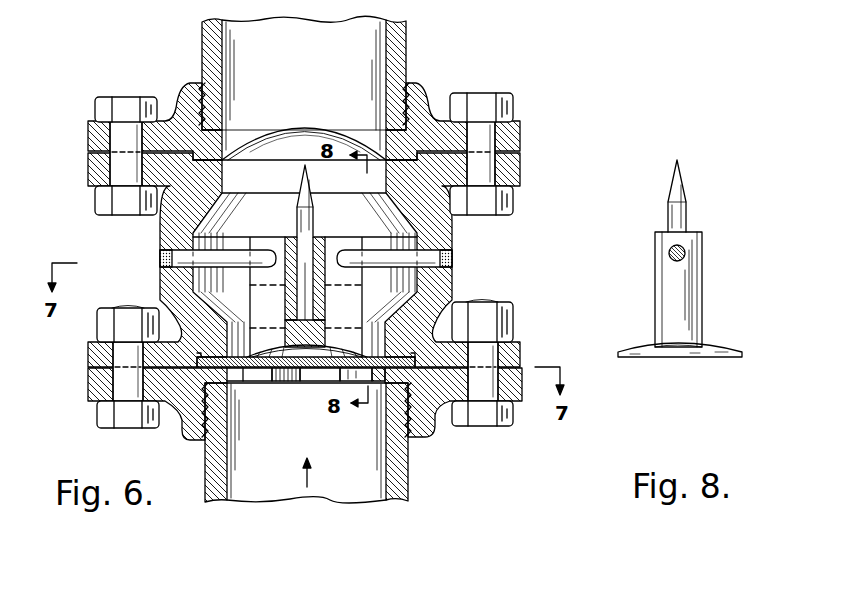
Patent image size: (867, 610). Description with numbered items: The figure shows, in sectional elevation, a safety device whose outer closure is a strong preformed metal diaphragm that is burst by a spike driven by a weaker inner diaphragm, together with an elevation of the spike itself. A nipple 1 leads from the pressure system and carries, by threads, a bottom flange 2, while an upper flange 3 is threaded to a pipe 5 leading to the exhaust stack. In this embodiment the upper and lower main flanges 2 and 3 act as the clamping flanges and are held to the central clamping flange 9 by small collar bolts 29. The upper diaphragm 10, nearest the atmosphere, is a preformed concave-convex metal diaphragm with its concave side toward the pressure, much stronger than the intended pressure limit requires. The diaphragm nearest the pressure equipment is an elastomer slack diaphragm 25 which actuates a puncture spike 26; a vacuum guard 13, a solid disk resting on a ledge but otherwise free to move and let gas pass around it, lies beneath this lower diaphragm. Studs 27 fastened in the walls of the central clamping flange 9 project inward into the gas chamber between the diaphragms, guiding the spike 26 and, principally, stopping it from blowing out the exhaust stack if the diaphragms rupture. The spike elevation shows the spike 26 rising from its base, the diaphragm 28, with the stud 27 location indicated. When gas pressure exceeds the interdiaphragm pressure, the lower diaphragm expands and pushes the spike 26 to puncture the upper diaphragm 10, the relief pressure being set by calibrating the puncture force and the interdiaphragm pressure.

In FIG. 6, the nipple 1 is at (410, 476).
In FIG. 6, the bottom flange 2 is at (90, 393).
In FIG. 6, the upper flange 3 is at (522, 133).
In FIG. 6, the pipe 5 is at (408, 36).
In FIG. 6, the central clamping flange 9 is at (453, 283).
In FIG. 6, the upper diaphragm 10 is at (311, 129).
In FIG. 6, the vacuum guard 13 is at (298, 380).
In FIG. 6, the elastomer slack diaphragm 25 is at (375, 328).
In FIG. 6, the puncture spike 26 is at (315, 223).
In FIG. 8, the puncture spike 26 is at (688, 213).
In FIG. 6, the studs 27 is at (385, 252).
In FIG. 8, the studs 27 is at (685, 250).
In FIG. 6, the diaphragm 28 is at (267, 341).
In FIG. 8, the diaphragm 28 is at (713, 343).
In FIG. 6, the small collar bolts 29 is at (513, 105).